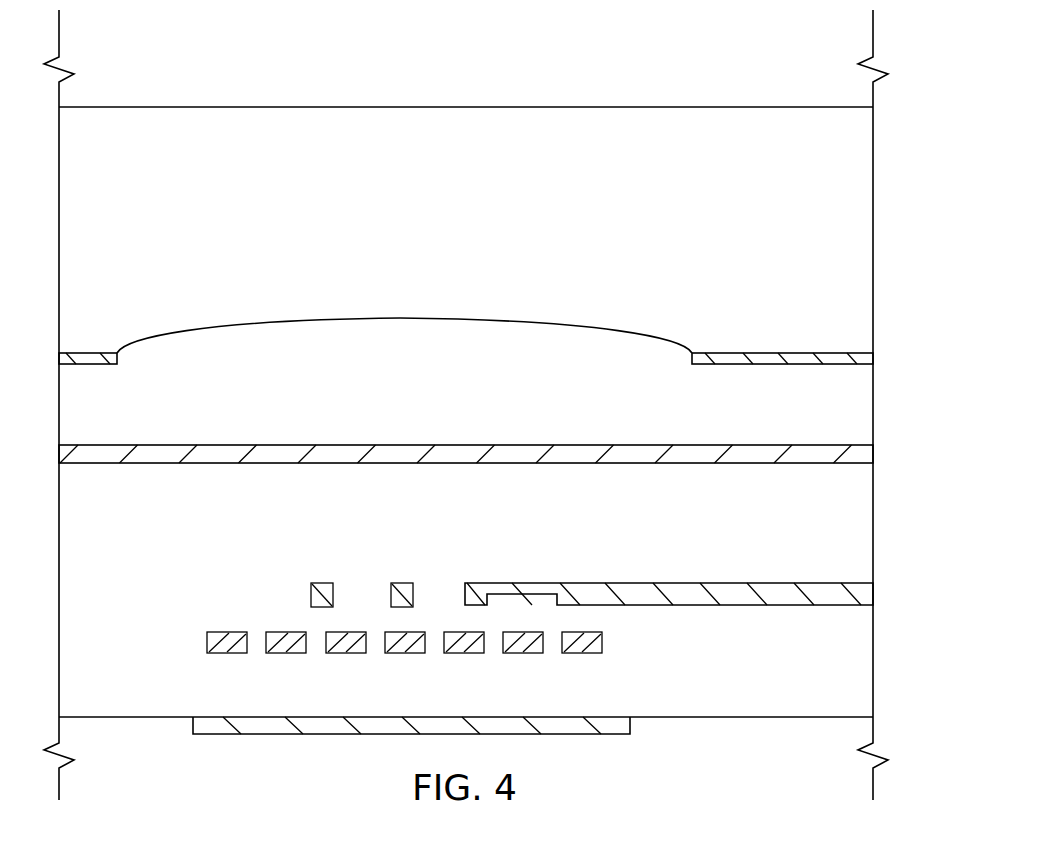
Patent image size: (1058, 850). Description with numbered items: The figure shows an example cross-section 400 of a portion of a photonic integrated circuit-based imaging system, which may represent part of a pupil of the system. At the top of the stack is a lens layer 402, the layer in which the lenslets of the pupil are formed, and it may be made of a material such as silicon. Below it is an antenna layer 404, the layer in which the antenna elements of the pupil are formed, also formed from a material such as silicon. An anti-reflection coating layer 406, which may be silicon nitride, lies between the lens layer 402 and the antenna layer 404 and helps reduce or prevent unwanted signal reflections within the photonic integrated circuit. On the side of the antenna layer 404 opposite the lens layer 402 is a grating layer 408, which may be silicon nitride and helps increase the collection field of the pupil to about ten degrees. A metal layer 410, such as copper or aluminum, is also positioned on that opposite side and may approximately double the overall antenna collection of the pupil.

The cross-section 400 is at (534, 106).
The lens layer 402 is at (874, 357).
The antenna layer 404 is at (874, 594).
The anti-reflection coating layer 406 is at (874, 452).
The grating layer 408 is at (874, 643).
The metal layer 410 is at (262, 725).